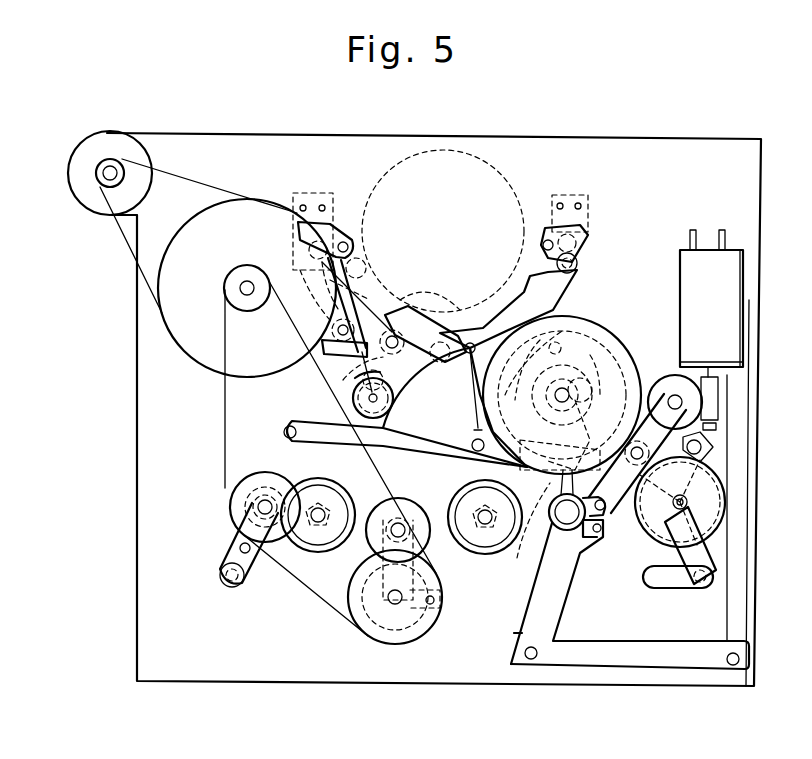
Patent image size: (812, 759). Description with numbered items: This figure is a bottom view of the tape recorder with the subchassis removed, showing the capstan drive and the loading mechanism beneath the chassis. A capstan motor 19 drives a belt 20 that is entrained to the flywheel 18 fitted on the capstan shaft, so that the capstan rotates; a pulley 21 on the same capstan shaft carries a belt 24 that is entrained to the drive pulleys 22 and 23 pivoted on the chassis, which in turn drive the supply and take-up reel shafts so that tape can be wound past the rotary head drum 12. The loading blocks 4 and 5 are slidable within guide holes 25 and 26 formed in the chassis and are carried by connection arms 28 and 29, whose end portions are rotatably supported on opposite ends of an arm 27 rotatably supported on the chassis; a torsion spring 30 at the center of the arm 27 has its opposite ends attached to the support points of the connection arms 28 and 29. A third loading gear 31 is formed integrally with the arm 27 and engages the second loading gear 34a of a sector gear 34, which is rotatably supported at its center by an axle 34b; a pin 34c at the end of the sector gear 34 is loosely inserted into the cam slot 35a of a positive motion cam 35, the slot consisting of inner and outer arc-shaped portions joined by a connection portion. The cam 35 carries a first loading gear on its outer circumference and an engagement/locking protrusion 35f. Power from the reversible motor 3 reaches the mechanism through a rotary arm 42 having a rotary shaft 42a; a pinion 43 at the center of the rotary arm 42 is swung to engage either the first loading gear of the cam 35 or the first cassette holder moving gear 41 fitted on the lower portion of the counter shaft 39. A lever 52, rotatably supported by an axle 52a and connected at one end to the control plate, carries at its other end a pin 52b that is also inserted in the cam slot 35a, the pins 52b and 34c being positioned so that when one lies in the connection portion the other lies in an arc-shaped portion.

The reversible motor 3 is at (740, 272).
The loading block 4 is at (585, 240).
The loading block 5 is at (343, 235).
The rotary head drum 12 is at (508, 200).
The flywheel 18 is at (182, 340).
The capstan motor 19 is at (88, 187).
The belt 20 is at (123, 243).
The pulley 21 is at (241, 268).
The drive pulley 22 is at (430, 622).
The drive pulley 23 is at (243, 497).
The belt 24 is at (222, 388).
The guide hole 25 is at (575, 275).
The guide hole 26 is at (372, 300).
The arm 27 is at (432, 318).
The connection arm 28 is at (515, 325).
The connection arm 29 is at (353, 302).
The torsion spring 30 is at (400, 326).
The third loading gear 31 is at (373, 400).
The sector gear 34 is at (458, 470).
The second loading gear 34a is at (345, 372).
The axle 34b is at (474, 443).
The pin 34c is at (521, 562).
The positive motion cam 35 is at (618, 378).
The cam slot 35a is at (560, 330).
The engagement/locking protrusion 35f is at (598, 336).
The counter shaft 39 is at (722, 478).
The first cassette holder moving gear 41 is at (703, 524).
The rotary arm 42 is at (626, 520).
The rotary shaft 42a is at (706, 380).
The pinion 43 is at (680, 502).
The lever 52 is at (705, 570).
The axle 52a is at (715, 447).
The pin 52b is at (571, 456).